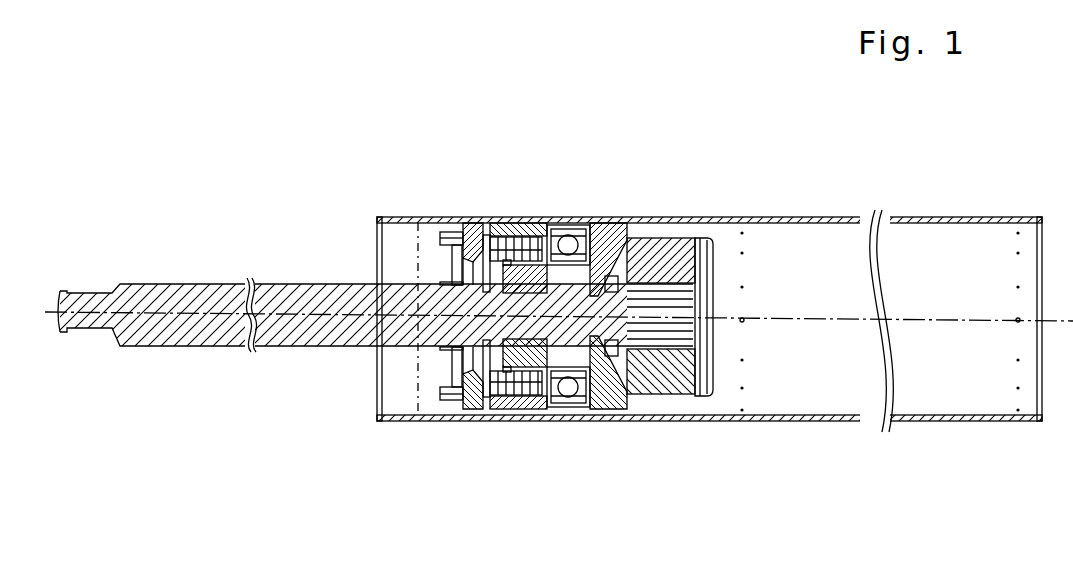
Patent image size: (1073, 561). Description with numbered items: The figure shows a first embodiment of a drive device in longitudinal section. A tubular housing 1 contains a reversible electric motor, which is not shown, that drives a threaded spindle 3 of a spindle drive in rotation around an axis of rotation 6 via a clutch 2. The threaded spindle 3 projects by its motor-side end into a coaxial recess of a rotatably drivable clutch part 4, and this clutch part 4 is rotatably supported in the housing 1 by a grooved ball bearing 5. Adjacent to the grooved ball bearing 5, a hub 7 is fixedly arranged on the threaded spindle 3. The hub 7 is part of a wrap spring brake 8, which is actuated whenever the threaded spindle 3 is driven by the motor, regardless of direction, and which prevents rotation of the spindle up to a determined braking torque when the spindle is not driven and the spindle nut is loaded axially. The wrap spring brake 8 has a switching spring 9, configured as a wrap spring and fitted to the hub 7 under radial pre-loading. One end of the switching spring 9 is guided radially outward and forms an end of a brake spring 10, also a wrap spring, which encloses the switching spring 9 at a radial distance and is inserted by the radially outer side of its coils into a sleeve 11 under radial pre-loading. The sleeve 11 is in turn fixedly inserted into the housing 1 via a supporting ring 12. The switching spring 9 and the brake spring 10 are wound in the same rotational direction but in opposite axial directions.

The tubular housing 1 is at (925, 218).
The clutch 2 is at (668, 220).
The threaded spindle 3 is at (137, 284).
The clutch part 4 is at (627, 247).
The grooved ball bearing 5 is at (570, 222).
The axis of rotation 6 is at (215, 311).
The hub 7 is at (445, 408).
The wrap spring brake 8 is at (520, 421).
The switching spring 9 is at (552, 408).
The brake spring 10 is at (514, 240).
The sleeve 11 is at (487, 232).
The supporting ring 12 is at (455, 236).